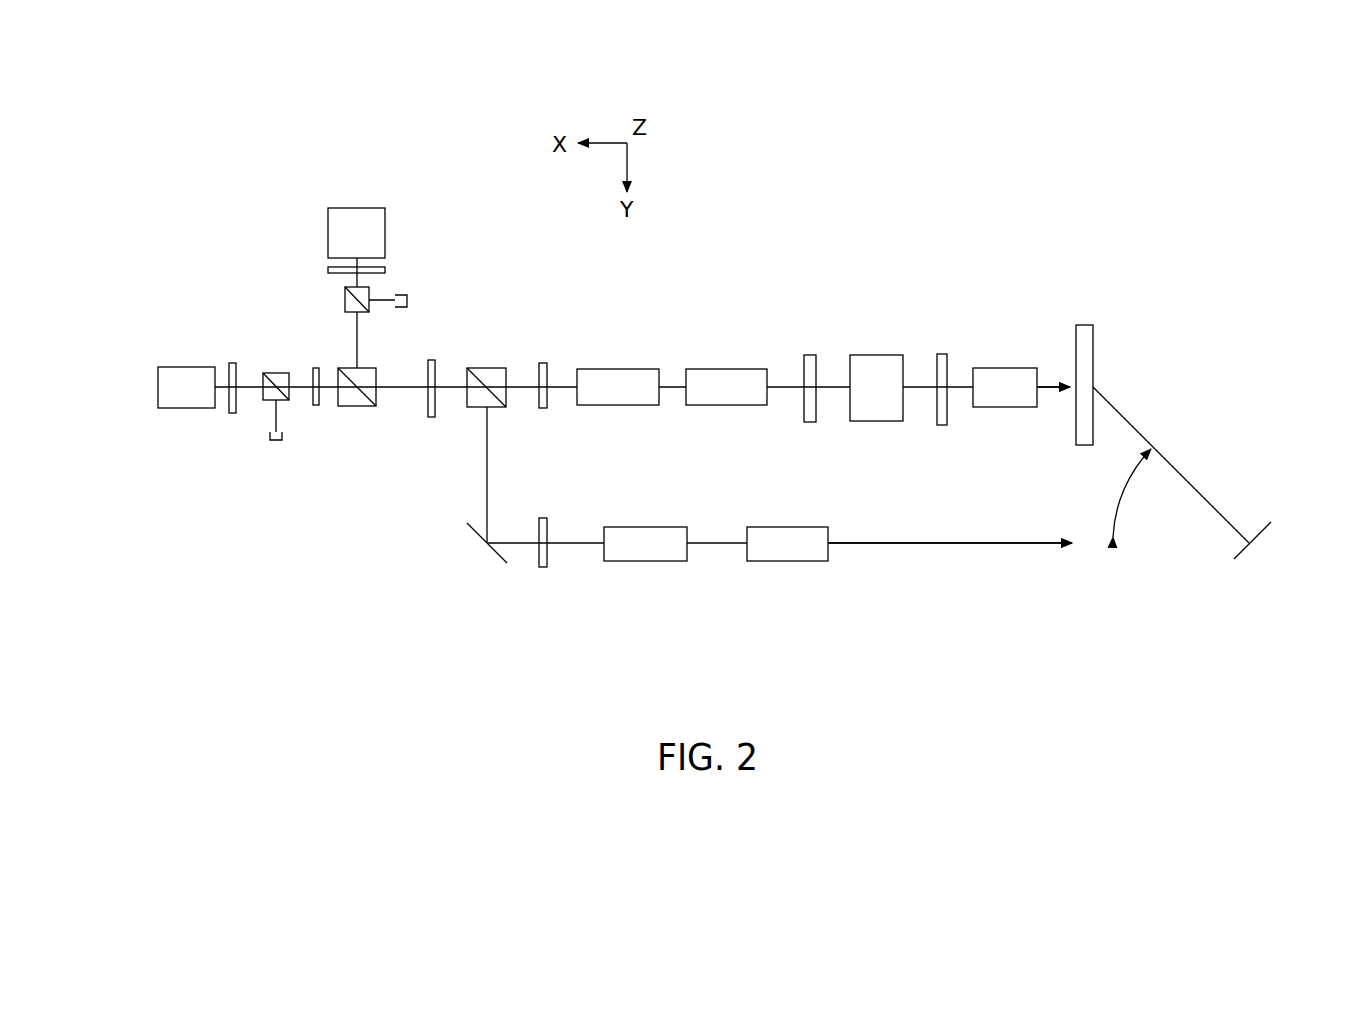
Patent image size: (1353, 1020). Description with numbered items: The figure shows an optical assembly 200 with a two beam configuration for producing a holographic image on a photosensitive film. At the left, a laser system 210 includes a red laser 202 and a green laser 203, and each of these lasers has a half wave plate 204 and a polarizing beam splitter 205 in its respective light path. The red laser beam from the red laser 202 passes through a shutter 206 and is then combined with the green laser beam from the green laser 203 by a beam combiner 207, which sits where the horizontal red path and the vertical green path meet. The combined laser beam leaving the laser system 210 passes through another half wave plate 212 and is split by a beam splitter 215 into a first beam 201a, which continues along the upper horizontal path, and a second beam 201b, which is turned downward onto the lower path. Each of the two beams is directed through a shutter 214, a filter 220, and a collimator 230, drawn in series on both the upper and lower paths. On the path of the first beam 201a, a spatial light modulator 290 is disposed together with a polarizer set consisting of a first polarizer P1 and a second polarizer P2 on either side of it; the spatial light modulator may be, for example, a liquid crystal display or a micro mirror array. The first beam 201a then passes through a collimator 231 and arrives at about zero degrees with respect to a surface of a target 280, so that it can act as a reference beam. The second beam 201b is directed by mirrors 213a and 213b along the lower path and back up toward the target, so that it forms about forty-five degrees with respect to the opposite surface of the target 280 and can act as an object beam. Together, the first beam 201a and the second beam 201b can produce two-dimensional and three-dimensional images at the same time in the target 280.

The optical assembly 200 is at (1137, 148).
The laser system 210 is at (275, 210).
The red laser 202 is at (158, 387).
The green laser 203 is at (362, 208).
The ½ wave plate 204 is at (230, 417).
The polarizing beam splitter 205 is at (345, 300).
The shutter 206 is at (315, 407).
The beam combiner 207 is at (368, 407).
The ½ wave plate 212 is at (432, 417).
The beam splitter 215 is at (485, 368).
The shutter 214 is at (542, 363).
The filter 220 is at (627, 405).
The collimator 230 is at (753, 405).
The polarizer P1 is at (808, 355).
The polarizer P2 is at (940, 354).
The spatial light modulator 290 is at (877, 421).
The collimator 231 is at (1005, 407).
The first beam 201a is at (1047, 383).
The second beam 201b is at (990, 545).
The target 280 is at (1084, 325).
The mirror 213a is at (497, 558).
The mirror 213b is at (1240, 557).